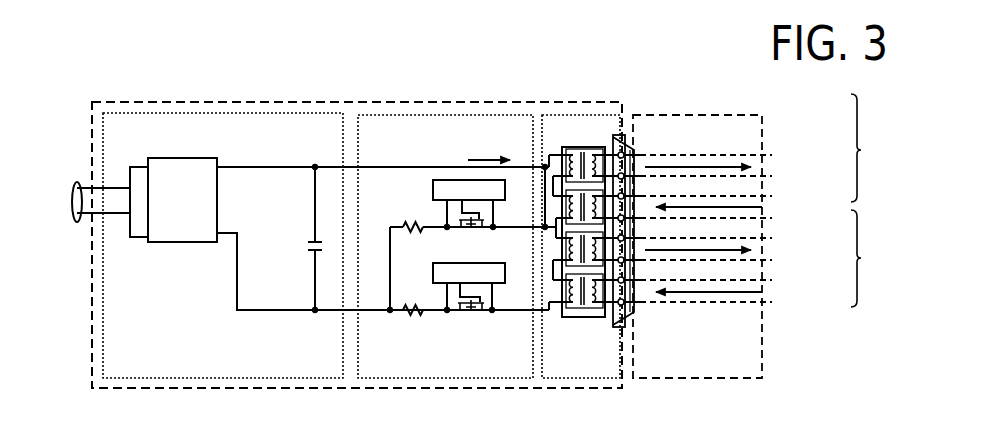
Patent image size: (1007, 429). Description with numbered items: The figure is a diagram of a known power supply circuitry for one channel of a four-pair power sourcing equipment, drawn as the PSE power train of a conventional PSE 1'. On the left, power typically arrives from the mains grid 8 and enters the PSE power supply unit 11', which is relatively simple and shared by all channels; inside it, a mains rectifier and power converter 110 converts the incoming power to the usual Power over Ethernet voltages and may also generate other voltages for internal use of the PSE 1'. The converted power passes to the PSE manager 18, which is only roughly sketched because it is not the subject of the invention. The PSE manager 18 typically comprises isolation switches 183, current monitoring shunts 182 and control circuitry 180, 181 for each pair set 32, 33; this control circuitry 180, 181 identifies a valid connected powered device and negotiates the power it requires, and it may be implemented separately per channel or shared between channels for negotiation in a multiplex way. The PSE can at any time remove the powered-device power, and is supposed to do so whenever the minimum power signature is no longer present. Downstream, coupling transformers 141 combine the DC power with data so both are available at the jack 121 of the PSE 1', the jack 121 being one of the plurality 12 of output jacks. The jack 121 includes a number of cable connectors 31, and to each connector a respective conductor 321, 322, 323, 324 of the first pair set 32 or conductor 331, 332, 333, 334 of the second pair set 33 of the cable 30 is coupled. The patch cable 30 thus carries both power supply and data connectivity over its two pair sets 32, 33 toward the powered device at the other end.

The PSE 1' is at (357, 225).
The PSE power supply unit 11' is at (223, 220).
The mains rectifier and power converter 110 is at (171, 246).
The mains grid 8 is at (75, 223).
The PSE manager 18 is at (390, 112).
The control circuitry 180 is at (443, 182).
The control circuitry 181 is at (498, 285).
The current monitoring shunt 182 is at (412, 320).
The isolation switch 183 is at (470, 316).
The plurality of output jacks 12 is at (552, 112).
The coupling transformers 141 is at (590, 321).
The jack 121 is at (613, 133).
The cable connector 31 is at (637, 142).
The patch cable 30 is at (706, 112).
The pair set 32 is at (869, 148).
The conductor 321 is at (772, 154).
The conductor 322 is at (780, 174).
The conductor 323 is at (777, 194).
The conductor 324 is at (773, 215).
The pair set 33 is at (869, 258).
The conductor 331 is at (772, 234).
The conductor 332 is at (772, 258).
The conductor 333 is at (772, 280).
The conductor 334 is at (772, 302).